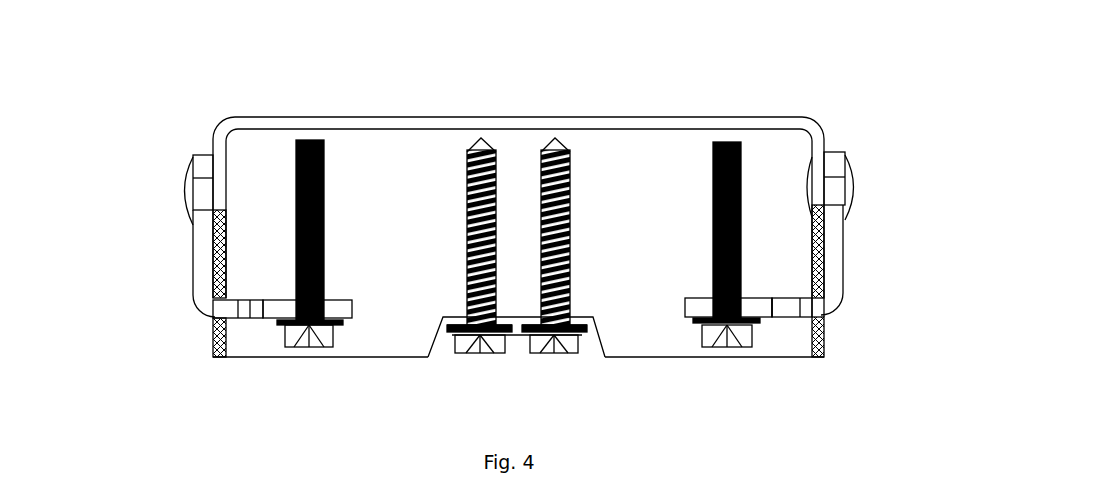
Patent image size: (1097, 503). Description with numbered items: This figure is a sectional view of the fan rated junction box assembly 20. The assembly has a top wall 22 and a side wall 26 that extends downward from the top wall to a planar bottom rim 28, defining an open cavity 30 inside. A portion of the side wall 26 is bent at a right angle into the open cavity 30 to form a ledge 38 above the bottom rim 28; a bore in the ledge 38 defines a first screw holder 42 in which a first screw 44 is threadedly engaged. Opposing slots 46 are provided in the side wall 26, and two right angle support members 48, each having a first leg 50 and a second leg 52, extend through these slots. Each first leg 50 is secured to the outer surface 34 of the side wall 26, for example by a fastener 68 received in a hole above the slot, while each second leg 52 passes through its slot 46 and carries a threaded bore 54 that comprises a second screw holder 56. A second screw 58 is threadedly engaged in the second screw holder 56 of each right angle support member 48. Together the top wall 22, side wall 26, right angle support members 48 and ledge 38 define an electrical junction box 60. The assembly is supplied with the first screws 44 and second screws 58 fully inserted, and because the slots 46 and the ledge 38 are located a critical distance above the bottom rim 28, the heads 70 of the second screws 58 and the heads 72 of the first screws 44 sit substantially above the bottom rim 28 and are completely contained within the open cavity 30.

The fan rated junction box assembly 20 is at (808, 88).
The top wall 22 is at (518, 123).
The electrical junction box 60 is at (717, 115).
The side wall 26 is at (222, 258).
The outer surface 34 is at (213, 342).
The fastener 68 is at (190, 178).
The first leg 50 is at (203, 258).
The right angle support members 48 is at (195, 290).
The opposing slots 46 is at (223, 297).
The second leg 52 is at (343, 308).
The threaded bore 54 is at (243, 318).
The second screw holder 56 is at (253, 318).
The second screw 58 is at (325, 215).
The heads of the second screws 70 is at (333, 347).
The first screw 44 is at (472, 210).
The ledge 38 is at (517, 318).
The first screw holder 42 is at (465, 325).
The heads of the first screws 72 is at (503, 353).
The open cavity 30 is at (392, 277).
The bottom rim 28 is at (822, 355).